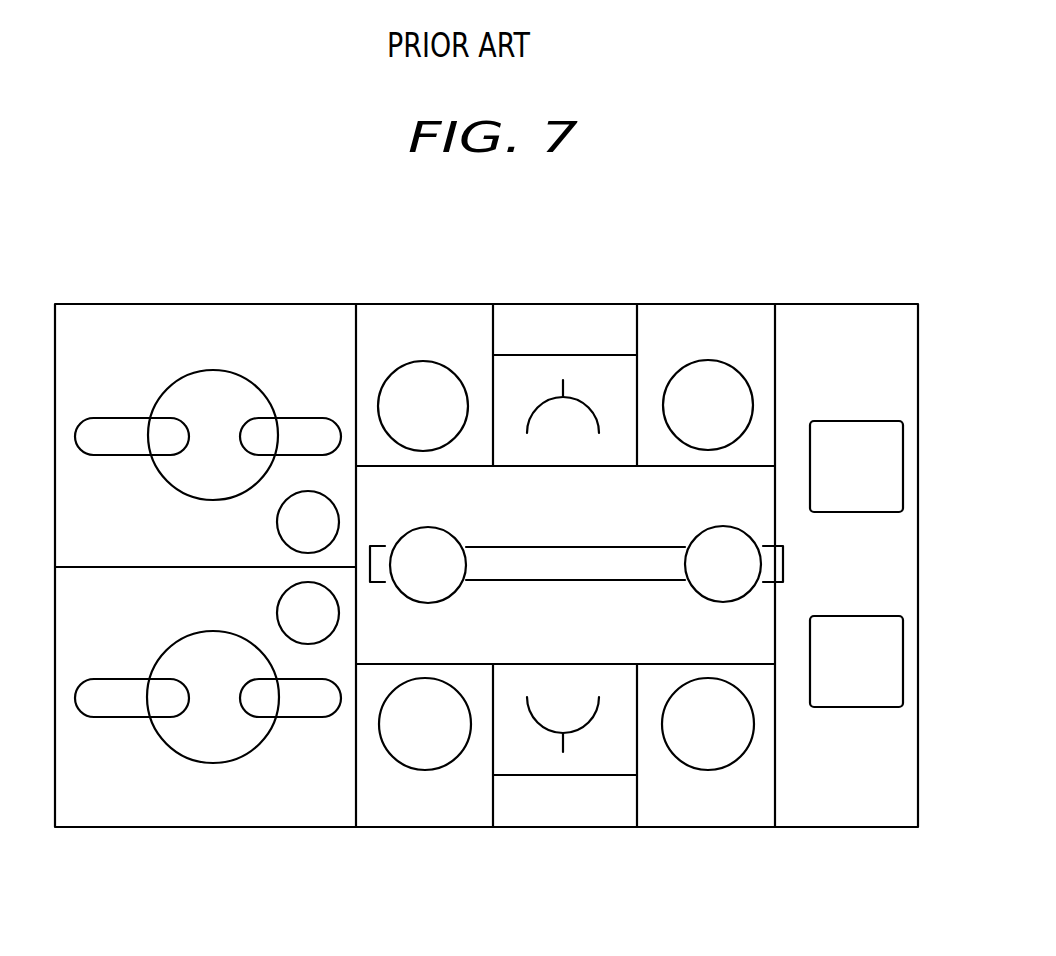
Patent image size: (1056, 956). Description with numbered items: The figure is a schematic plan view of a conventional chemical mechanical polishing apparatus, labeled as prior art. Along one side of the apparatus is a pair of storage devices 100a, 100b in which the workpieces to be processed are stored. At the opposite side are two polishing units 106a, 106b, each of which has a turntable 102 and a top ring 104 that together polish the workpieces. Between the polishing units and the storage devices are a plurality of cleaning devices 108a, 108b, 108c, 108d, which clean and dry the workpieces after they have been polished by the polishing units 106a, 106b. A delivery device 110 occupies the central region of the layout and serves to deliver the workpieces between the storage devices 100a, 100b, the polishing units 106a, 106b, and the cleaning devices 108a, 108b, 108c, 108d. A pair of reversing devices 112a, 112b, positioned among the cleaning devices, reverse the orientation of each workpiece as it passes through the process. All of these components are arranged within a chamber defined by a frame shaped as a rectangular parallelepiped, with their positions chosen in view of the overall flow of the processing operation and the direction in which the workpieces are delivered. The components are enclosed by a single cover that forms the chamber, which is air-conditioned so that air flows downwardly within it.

The storage device 100a is at (885, 463).
The storage device 100b is at (885, 662).
The turntable 102 is at (212, 388).
The top ring 104 is at (302, 425).
The polishing unit 106a is at (252, 345).
The polishing unit 106b is at (223, 787).
The cleaning device 108a is at (422, 390).
The cleaning device 108b is at (717, 382).
The cleaning device 108c is at (432, 743).
The cleaning device 108d is at (710, 747).
The delivery device 110 is at (727, 507).
The reversing device 112a is at (588, 370).
The reversing device 112b is at (590, 758).